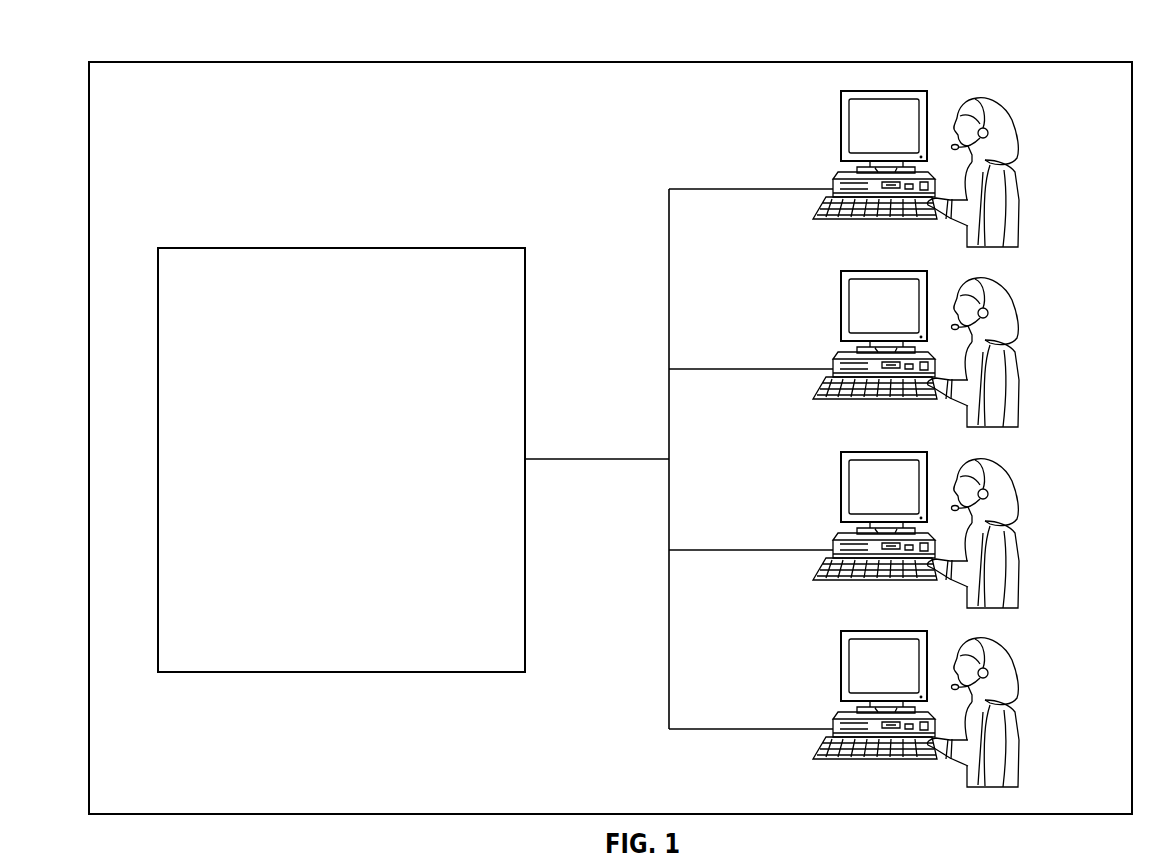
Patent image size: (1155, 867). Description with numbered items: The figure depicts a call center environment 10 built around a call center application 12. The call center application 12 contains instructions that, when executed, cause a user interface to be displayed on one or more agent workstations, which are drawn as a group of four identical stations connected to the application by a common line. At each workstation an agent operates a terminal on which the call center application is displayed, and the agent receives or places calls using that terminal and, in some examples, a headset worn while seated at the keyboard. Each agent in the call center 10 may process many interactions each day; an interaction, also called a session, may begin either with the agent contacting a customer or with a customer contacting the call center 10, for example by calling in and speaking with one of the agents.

The call center environment 10 is at (1082, 62).
The call center application 12 is at (475, 248).